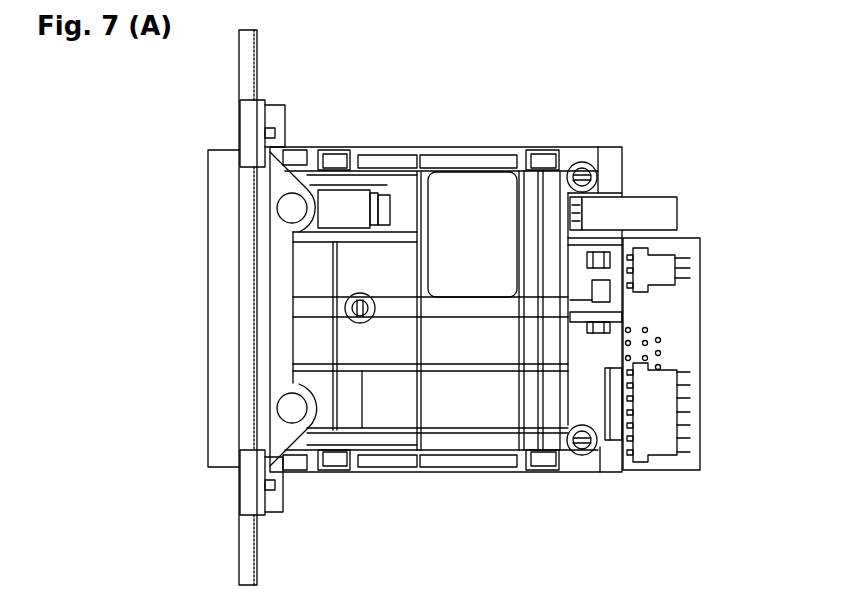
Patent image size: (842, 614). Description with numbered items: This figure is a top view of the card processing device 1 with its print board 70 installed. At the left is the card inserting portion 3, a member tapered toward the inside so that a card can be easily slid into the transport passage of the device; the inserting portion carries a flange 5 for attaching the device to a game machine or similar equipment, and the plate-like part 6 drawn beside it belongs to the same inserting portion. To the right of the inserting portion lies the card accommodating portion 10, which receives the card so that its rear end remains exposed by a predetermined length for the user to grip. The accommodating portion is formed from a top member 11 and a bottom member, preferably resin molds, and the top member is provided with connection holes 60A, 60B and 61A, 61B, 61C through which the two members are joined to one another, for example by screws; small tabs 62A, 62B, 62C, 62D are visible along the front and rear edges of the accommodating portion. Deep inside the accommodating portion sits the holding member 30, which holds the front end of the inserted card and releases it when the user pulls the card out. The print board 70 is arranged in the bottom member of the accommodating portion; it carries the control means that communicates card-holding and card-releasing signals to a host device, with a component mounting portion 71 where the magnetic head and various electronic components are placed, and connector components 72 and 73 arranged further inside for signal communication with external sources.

The card processing device 1 is at (751, 517).
The card inserting portion 3 is at (201, 353).
The flange 5 is at (240, 117).
The bracket plate 6 is at (208, 430).
The card accommodating portion 10 is at (442, 486).
The top member 11 is at (477, 456).
The holding member 30 is at (668, 213).
The connection hole 60A is at (295, 203).
The connection hole 60B is at (295, 415).
The connection hole 61A is at (364, 296).
The connection hole 61B is at (584, 163).
The connection hole 61C is at (582, 455).
The engaging tab 62A is at (340, 156).
The engaging tab 62B is at (337, 460).
The engaging tab 62C is at (544, 156).
The engaging tab 62D is at (542, 468).
The print board 70 is at (700, 356).
The component mounting portion 71 is at (610, 348).
The connector component 72 is at (668, 278).
The connector component 73 is at (668, 420).